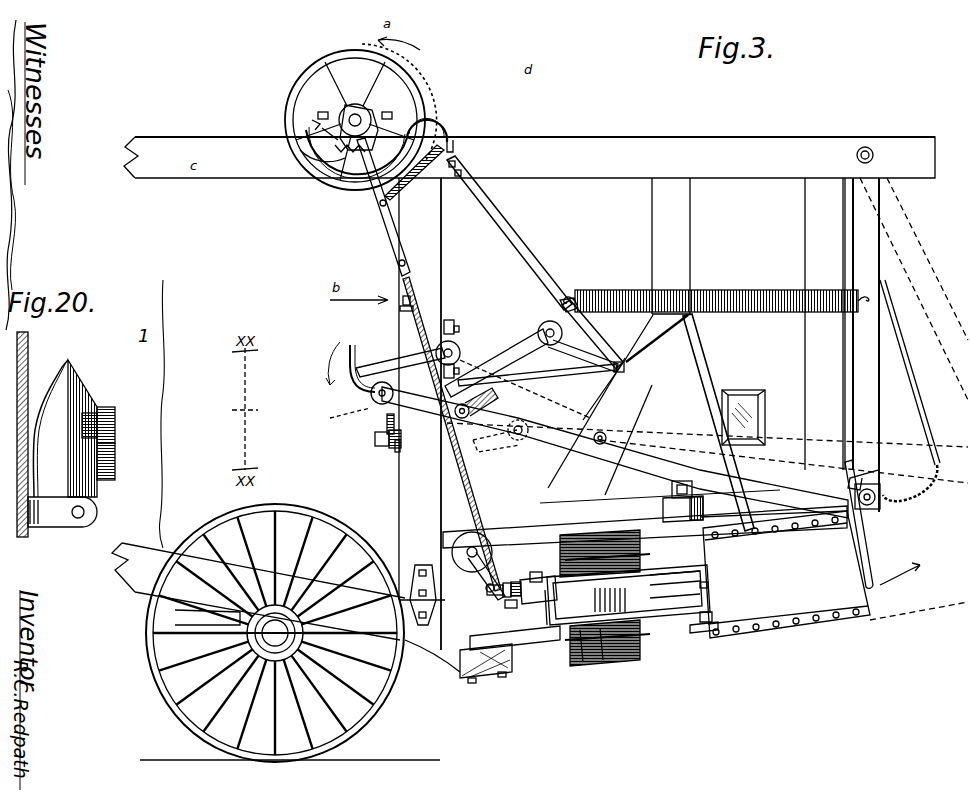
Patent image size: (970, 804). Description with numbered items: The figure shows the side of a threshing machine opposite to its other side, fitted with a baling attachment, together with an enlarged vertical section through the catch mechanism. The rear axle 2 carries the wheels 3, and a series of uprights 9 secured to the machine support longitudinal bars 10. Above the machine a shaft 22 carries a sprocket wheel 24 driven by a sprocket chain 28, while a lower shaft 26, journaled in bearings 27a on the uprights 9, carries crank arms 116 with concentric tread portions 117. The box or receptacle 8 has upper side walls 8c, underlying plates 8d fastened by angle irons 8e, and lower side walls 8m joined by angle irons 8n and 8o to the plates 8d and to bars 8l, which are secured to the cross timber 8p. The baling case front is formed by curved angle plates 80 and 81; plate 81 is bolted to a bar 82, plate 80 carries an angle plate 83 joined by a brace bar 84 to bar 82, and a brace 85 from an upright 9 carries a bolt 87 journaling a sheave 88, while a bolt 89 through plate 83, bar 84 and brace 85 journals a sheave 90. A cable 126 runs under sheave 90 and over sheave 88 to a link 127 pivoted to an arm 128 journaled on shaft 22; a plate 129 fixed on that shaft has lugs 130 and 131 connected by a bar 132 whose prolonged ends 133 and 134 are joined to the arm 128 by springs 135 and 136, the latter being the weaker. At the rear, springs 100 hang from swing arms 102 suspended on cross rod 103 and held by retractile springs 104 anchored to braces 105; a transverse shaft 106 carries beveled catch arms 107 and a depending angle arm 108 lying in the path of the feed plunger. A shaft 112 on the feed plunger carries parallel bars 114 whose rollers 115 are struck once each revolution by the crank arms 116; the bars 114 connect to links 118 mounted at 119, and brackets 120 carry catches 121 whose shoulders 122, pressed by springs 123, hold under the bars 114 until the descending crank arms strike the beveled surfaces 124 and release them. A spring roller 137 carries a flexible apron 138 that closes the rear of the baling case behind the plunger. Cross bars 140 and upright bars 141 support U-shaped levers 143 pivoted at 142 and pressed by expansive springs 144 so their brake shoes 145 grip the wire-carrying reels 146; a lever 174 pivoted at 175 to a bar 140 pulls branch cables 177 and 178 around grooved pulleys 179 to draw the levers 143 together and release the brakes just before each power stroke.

In FIG. 3, the rear axle 2 is at (275, 633).
In FIG. 3, the wheels 3 is at (146, 622).
In FIG. 3, the box or receptacle 8 is at (731, 354).
In FIG. 3, the side walls 8c is at (743, 403).
In FIG. 3, the plates 8d is at (795, 520).
In FIG. 3, the angle irons 8e is at (775, 485).
In FIG. 3, the bars 8l is at (820, 636).
In FIG. 3, the plates 8m is at (786, 574).
In FIG. 3, the angle irons 8n is at (825, 530).
In FIG. 3, the angle irons 8o is at (800, 620).
In FIG. 3, the cross timber 8p is at (470, 665).
In FIG. 3, the uprights 9 is at (630, 324).
In FIG. 3, the longitudinal bars 10 is at (529, 149).
In FIG. 3, the shaft 22 is at (355, 115).
In FIG. 3, the sprocket wheel 24 is at (290, 96).
In FIG. 3, the shaft 26 is at (458, 345).
In FIG. 3, the bearings 27a is at (449, 320).
In FIG. 3, the sprocket chain 28 is at (430, 90).
In FIG. 3, the angle plate 80 is at (540, 600).
In FIG. 3, the angle plate 81 is at (540, 640).
In FIG. 3, the bar 82 is at (505, 605).
In FIG. 3, the angle plate 83 is at (511, 592).
In FIG. 3, the brace bar 84 is at (487, 592).
In FIG. 3, the brace 85 is at (440, 515).
In FIG. 3, the bolt 87 is at (434, 552).
In FIG. 3, the sheave 88 is at (480, 535).
In FIG. 3, the bolt 89 is at (486, 590).
In FIG. 3, the sheave 90 is at (490, 580).
In FIG. 3, the springs 100 is at (912, 378).
In FIG. 3, the swing arms 102 is at (862, 260).
In FIG. 3, the cross rod 103 is at (866, 147).
In FIG. 3, the retractile springs 104 is at (770, 283).
In FIG. 3, the braces 105 is at (550, 290).
In FIG. 3, the transverse shaft 106 is at (855, 480).
In FIG. 3, the catch arms 107 is at (892, 470).
In FIG. 3, the angle arm 108 is at (866, 543).
In FIG. 3, the shaft 112 is at (880, 497).
In FIG. 20, the parallel bars 114 is at (106, 407).
In FIG. 3, the parallel bars 114 is at (742, 492).
In FIG. 20, the rollers 115 is at (88, 438).
In FIG. 3, the rollers 115 is at (380, 405).
In FIG. 3, the crank arms 116 is at (385, 366).
In FIG. 3, the tread portions 117 is at (350, 380).
In FIG. 3, the swinging links 118 is at (496, 363).
In FIG. 3, the pivot mounting 119 is at (562, 338).
In FIG. 20, the brackets 120 is at (60, 520).
In FIG. 3, the brackets 120 is at (380, 446).
In FIG. 20, the catches 121 is at (92, 490).
In FIG. 3, the catches 121 is at (400, 450).
In FIG. 20, the shoulders 122 is at (115, 465).
In FIG. 3, the shoulders 122 is at (387, 424).
In FIG. 20, the springs 123 is at (62, 410).
In FIG. 20, the beveled surfaces 124 is at (68, 360).
In FIG. 3, the beveled surfaces 124 is at (352, 355).
In FIG. 3, the cable 126 is at (465, 487).
In FIG. 3, the link 127 is at (398, 264).
In FIG. 3, the arm 128 is at (385, 235).
In FIG. 3, the plate 129 is at (345, 152).
In FIG. 3, the lug 130 is at (362, 150).
In FIG. 3, the lug 131 is at (318, 135).
In FIG. 3, the bar 132 is at (330, 140).
In FIG. 3, the prolonged end 133 is at (440, 128).
In FIG. 3, the prolonged end 134 is at (308, 131).
In FIG. 3, the spring 135 is at (420, 170).
In FIG. 3, the spring 136 is at (320, 118).
In FIG. 3, the spring roller 137 is at (705, 622).
In FIG. 3, the flexible apron 138 is at (718, 630).
In FIG. 3, the cross bars 140 is at (680, 612).
In FIG. 3, the upright bars 141 is at (700, 595).
In FIG. 3, the pivot 142 is at (612, 612).
In FIG. 3, the U-shaped levers 143 is at (672, 490).
In FIG. 3, the expansive springs 144 is at (590, 662).
In FIG. 3, the brake shoes 145 is at (600, 560).
In FIG. 3, the wire-carrying reels 146 is at (662, 548).
In FIG. 3, the lever 174 is at (545, 560).
In FIG. 3, the pivot 175 is at (706, 583).
In FIG. 3, the branch cable 177 is at (600, 520).
In FIG. 3, the branch cable 178 is at (560, 520).
In FIG. 3, the grooved pulleys 179 is at (547, 625).